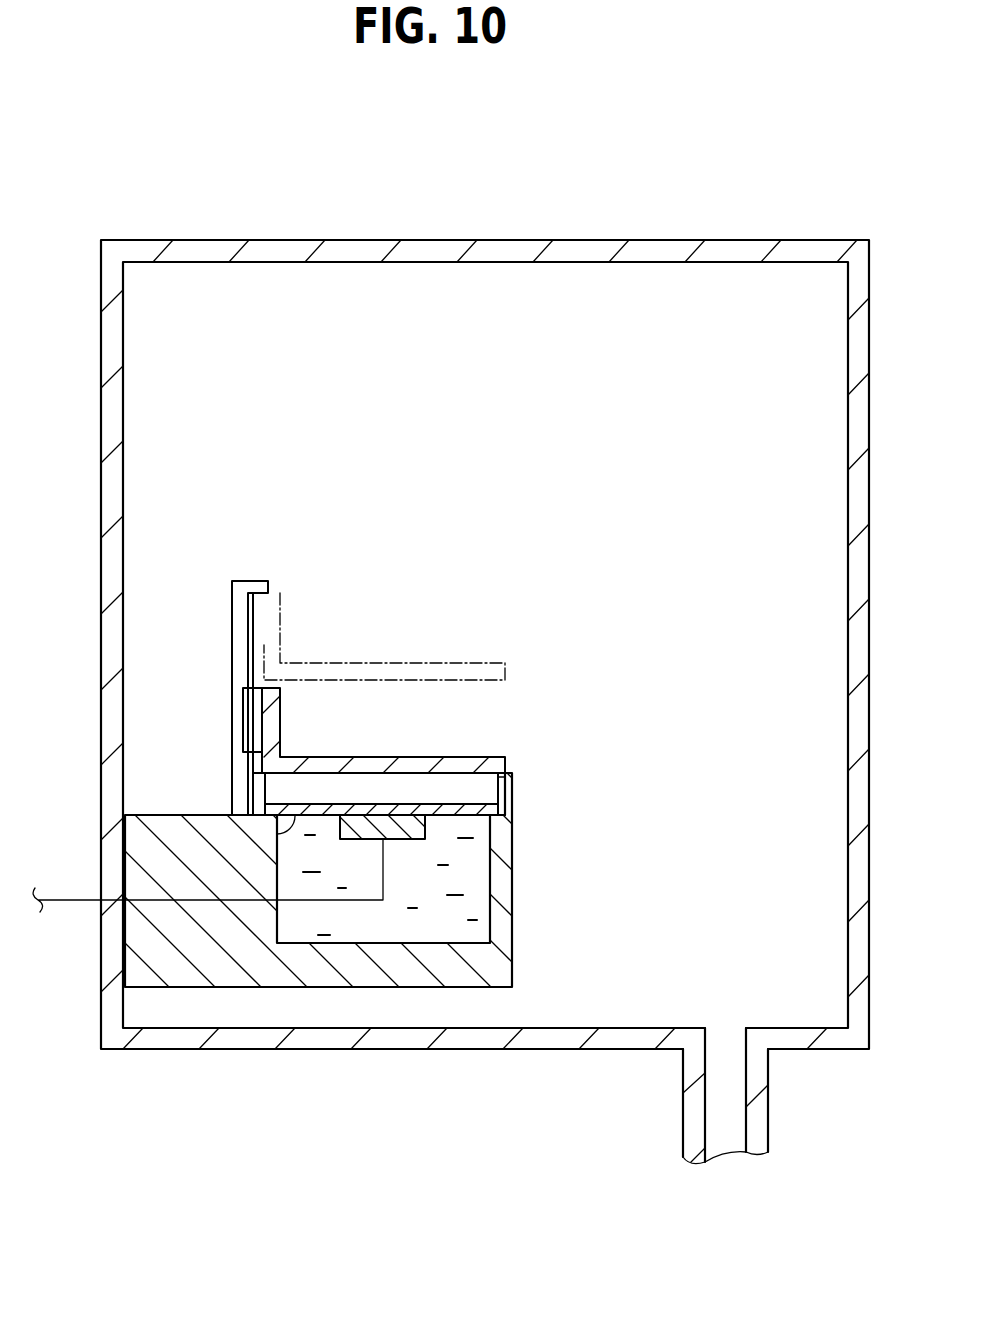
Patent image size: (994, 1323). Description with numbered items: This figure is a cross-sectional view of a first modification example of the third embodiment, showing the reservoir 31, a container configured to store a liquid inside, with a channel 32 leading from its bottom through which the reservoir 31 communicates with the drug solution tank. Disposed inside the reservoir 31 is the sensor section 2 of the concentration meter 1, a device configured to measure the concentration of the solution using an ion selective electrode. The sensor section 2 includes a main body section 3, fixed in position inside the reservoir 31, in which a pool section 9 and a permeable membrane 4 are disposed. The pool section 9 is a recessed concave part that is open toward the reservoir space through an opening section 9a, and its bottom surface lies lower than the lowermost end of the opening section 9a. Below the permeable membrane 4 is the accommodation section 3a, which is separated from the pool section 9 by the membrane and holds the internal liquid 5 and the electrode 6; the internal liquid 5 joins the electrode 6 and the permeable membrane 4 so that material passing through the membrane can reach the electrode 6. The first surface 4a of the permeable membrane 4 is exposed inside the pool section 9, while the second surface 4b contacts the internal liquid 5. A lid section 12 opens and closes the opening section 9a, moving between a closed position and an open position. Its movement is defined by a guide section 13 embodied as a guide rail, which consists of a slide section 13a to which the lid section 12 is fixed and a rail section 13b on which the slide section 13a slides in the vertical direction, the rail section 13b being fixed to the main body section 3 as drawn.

The concentration meter 1 is at (177, 608).
The sensor section 2 is at (566, 857).
The main body section 3 is at (349, 880).
The accommodation section 3a is at (512, 845).
The permeable membrane 4 is at (355, 772).
The first surface 4a is at (341, 804).
The second surface 4b is at (277, 835).
The internal liquid 5 is at (470, 908).
The electrode 6 is at (425, 838).
The pool section 9 is at (475, 763).
The opening section 9a is at (498, 777).
The lid section 12 is at (397, 757).
The guide section 13 is at (205, 698).
The slide section 13a is at (224, 720).
The rail section 13b is at (247, 657).
The reservoir 31 is at (490, 240).
The channel 32 is at (683, 1140).